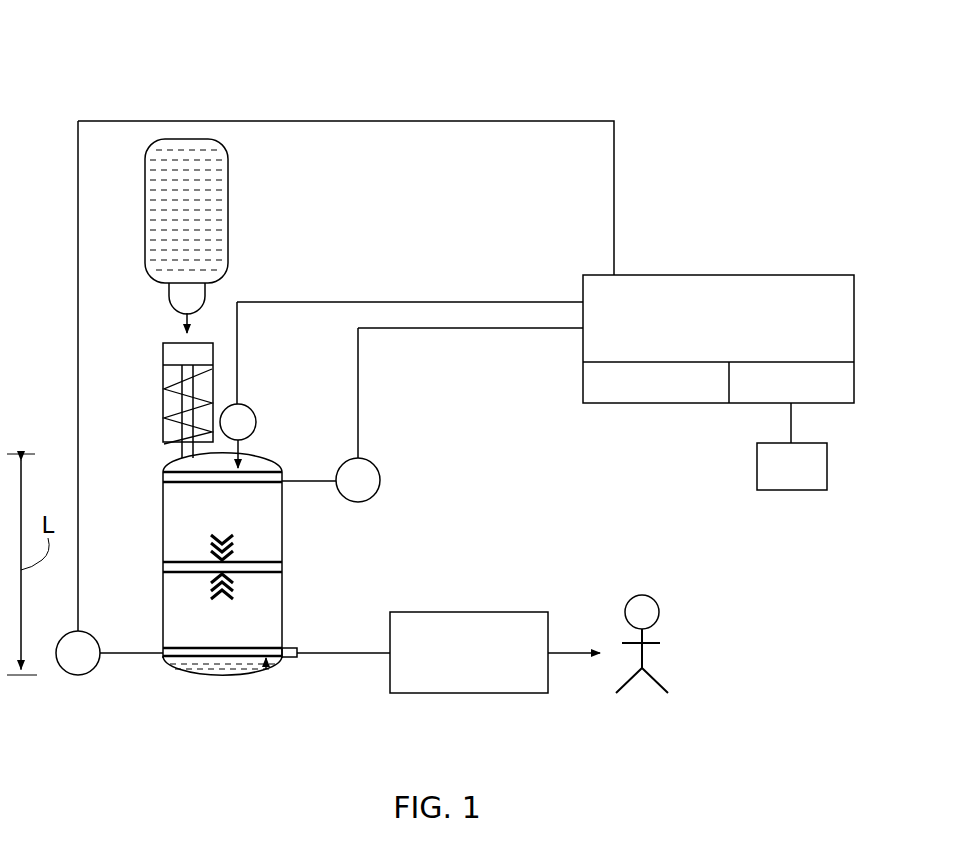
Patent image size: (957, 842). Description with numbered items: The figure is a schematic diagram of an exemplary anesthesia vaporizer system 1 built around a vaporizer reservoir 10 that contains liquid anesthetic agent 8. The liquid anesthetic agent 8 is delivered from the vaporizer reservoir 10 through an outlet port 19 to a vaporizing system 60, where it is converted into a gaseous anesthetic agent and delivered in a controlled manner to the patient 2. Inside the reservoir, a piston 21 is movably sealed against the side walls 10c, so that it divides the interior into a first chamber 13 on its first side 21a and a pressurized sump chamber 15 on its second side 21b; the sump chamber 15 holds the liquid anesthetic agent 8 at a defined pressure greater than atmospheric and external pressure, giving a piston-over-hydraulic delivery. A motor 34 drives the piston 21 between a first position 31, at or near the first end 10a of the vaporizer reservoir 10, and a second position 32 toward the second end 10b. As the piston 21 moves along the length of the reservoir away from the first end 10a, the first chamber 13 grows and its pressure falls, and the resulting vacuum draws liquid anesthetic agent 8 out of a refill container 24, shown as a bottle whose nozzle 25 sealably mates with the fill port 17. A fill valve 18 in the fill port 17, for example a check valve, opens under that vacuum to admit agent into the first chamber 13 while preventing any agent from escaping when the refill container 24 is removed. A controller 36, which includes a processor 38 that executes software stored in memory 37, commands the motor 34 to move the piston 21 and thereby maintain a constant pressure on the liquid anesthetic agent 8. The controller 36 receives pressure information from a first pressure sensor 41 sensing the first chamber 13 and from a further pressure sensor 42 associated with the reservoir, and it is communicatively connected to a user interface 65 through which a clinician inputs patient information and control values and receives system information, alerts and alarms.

The anesthesia vaporizer system 1 is at (745, 70).
The patient 2 is at (660, 612).
The liquid anesthetic agent 8 is at (228, 186).
The vaporizer reservoir 10 is at (259, 563).
The first end 10a is at (268, 466).
The second end 10b is at (222, 676).
The side walls 10c is at (283, 532).
The first chamber 13 is at (288, 468).
The sump chamber 15 is at (163, 613).
The fill port 17 is at (168, 452).
The fill valve 18 is at (163, 366).
The outlet port 19 is at (298, 649).
The piston 21 is at (163, 568).
The first side 21a is at (200, 560).
The second side 21b is at (198, 575).
The refill container 24 is at (228, 225).
The nozzle 25 is at (173, 300).
The first position 31 is at (152, 480).
The second position 32 is at (268, 668).
The motor 34 is at (246, 406).
The controller 36 is at (753, 372).
The memory 37 is at (748, 403).
The processor 38 is at (665, 403).
The first pressure sensor 41 is at (380, 480).
The pressure sensor 42 is at (78, 675).
The vaporizing system 60 is at (470, 612).
The user interface 65 is at (827, 468).